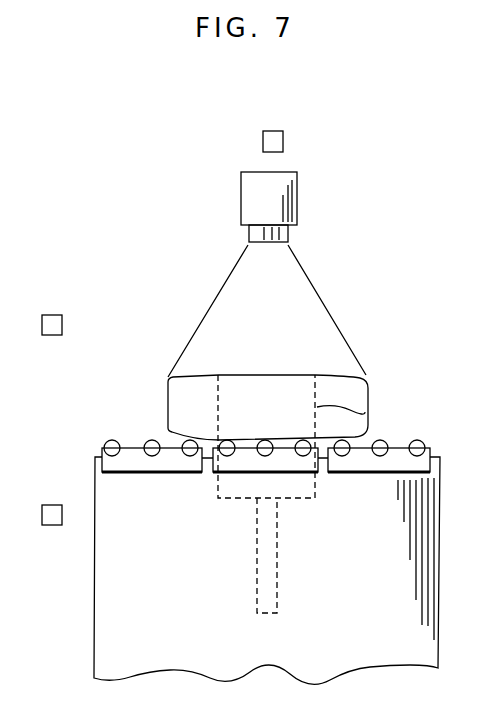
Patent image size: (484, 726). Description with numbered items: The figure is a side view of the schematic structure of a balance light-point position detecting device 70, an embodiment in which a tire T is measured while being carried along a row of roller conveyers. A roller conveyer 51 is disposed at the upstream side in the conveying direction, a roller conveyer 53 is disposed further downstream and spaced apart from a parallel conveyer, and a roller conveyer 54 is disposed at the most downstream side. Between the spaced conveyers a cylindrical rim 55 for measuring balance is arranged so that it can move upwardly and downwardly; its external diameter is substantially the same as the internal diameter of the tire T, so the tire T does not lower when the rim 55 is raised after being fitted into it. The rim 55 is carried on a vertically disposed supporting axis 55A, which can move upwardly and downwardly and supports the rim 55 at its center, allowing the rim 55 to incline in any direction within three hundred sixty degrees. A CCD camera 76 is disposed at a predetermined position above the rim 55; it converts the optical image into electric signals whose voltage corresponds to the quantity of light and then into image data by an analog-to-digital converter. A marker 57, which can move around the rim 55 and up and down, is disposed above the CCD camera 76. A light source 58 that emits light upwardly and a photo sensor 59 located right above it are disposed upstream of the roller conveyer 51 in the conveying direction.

The balance light-point position detecting device 70 is at (163, 332).
The CCD camera 76 is at (297, 206).
The marker 57 is at (283, 142).
The photo sensor 59 is at (52, 315).
The light source 58 is at (53, 525).
The tire T is at (170, 390).
The rim 55 is at (366, 412).
The supporting axis 55A is at (258, 614).
The roller conveyer 51 is at (170, 465).
The roller conveyer 53 is at (300, 468).
The roller conveyer 54 is at (370, 477).